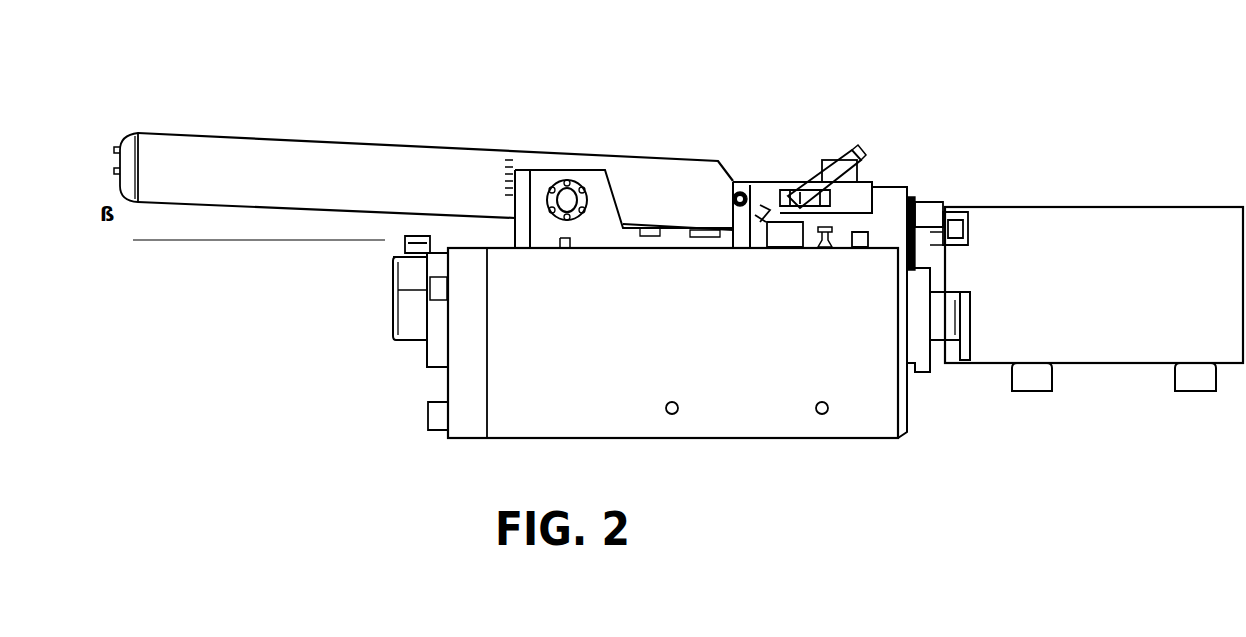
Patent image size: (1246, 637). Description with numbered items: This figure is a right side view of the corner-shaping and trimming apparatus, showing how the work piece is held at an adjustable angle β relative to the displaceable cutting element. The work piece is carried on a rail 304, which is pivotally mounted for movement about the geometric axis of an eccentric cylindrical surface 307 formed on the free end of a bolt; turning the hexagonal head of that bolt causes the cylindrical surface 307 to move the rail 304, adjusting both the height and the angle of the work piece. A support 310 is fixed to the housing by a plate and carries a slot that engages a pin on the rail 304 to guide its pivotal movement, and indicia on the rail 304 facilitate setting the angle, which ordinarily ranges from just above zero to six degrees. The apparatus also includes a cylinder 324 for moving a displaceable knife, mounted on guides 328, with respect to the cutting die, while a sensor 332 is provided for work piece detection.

The rail 304 is at (242, 137).
The support 310 is at (590, 168).
The eccentric cylindrical surface 307 is at (736, 196).
The sensor 332 is at (822, 177).
The cylinder 324 is at (1168, 206).
The guides 328 is at (963, 300).